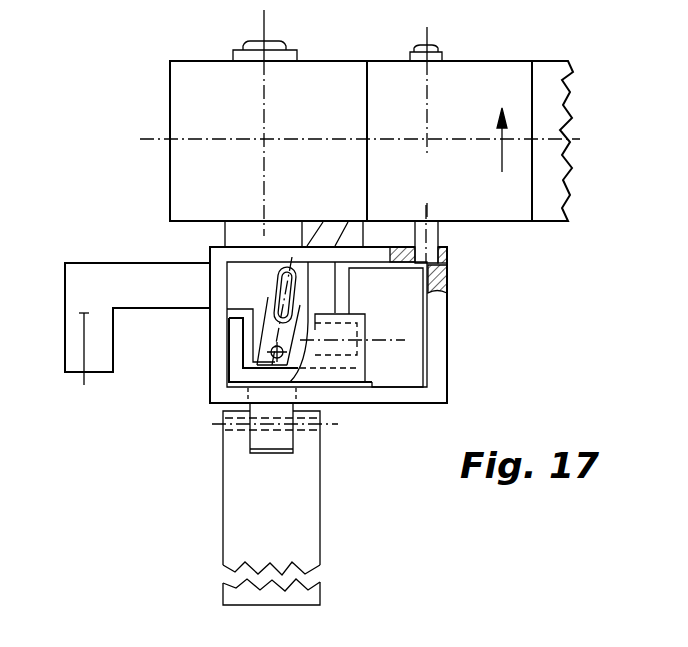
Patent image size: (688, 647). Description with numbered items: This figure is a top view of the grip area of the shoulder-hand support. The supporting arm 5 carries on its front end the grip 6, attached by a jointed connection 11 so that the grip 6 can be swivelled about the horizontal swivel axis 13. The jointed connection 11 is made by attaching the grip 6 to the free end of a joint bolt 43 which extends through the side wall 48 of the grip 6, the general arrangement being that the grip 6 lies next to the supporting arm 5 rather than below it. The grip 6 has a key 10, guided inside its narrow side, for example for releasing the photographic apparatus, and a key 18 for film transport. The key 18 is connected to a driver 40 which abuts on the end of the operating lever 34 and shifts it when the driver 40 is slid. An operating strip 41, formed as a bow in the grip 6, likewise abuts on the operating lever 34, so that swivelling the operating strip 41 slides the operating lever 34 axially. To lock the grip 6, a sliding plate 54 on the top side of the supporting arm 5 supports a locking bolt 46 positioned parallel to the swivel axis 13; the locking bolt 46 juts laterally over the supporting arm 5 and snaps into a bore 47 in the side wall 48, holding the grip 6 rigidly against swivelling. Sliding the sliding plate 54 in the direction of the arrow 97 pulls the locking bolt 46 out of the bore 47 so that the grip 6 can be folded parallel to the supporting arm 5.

The supporting arm 5 is at (548, 88).
The grip 6 is at (222, 367).
The key 10 is at (137, 340).
The jointed connection 11 is at (245, 233).
The swivel axis 13 is at (192, 103).
The key 18 is at (277, 505).
The operating lever 34 is at (323, 284).
The driver 40 is at (355, 366).
The operating strip 41 is at (292, 316).
The joint bolt 43 is at (248, 43).
The locking bolt 46 is at (418, 45).
The bore 47 is at (445, 265).
The side wall 48 is at (372, 228).
The sliding plate 54 is at (476, 77).
The arrow 97 is at (497, 162).